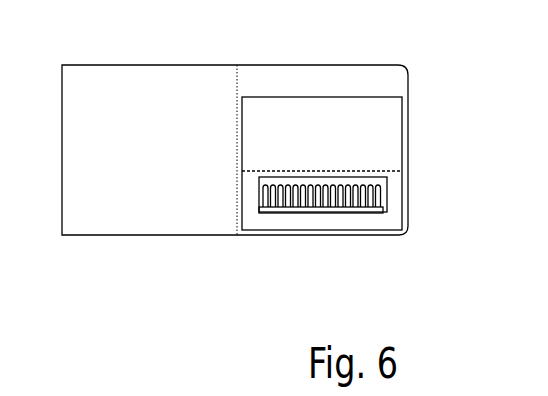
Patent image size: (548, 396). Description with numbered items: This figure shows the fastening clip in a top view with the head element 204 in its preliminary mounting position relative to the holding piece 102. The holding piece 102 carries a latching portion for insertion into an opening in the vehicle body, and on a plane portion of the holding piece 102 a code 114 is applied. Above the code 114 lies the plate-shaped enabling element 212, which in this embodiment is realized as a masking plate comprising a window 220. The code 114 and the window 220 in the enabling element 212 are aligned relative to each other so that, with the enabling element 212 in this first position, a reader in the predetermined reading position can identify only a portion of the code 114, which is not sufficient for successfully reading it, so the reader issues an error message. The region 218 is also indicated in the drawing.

The holding piece 102 is at (123, 216).
The head element 204 is at (369, 96).
The receiving area 218 is at (275, 115).
The enabling element 212 is at (320, 237).
The code 114 is at (368, 203).
The window 220 is at (259, 213).